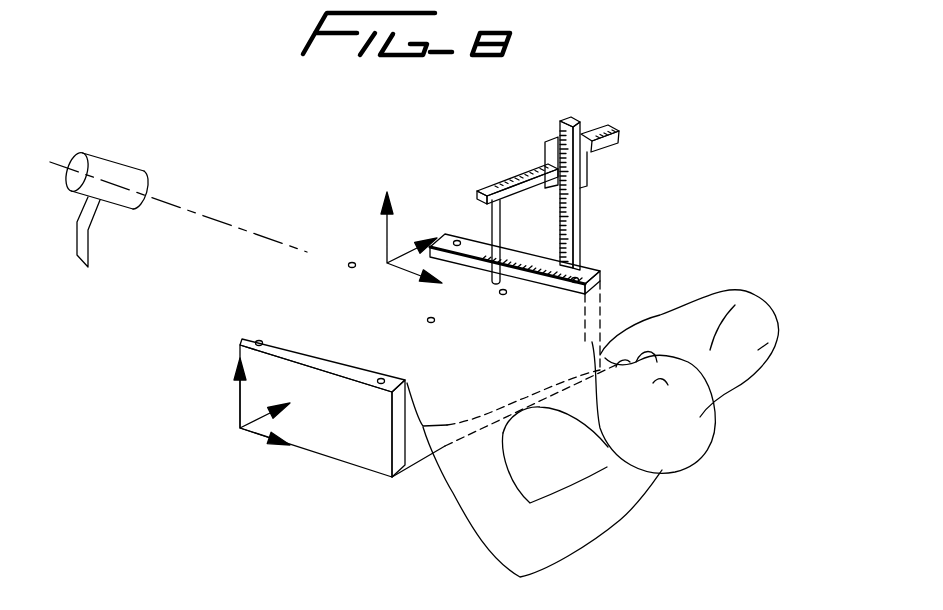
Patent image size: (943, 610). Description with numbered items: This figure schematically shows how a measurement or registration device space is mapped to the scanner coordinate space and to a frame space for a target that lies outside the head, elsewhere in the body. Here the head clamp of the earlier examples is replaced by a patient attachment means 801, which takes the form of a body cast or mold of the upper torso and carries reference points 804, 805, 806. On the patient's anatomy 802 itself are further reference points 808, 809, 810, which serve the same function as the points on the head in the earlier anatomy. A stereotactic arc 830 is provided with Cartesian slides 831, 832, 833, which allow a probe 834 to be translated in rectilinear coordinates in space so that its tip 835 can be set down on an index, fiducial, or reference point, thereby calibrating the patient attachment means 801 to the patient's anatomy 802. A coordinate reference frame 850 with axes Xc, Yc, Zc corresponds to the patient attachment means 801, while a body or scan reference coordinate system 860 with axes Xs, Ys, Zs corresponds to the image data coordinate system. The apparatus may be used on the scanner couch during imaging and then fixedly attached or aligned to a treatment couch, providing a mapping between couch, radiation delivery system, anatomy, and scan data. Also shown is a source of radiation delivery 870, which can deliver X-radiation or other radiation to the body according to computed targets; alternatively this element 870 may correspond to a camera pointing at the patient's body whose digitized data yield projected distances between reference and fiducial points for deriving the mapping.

The patient attachment means 801 is at (383, 452).
The patient's anatomy 802 is at (548, 332).
The reference point 804 is at (258, 340).
The reference point 805 is at (370, 386).
The reference point 806 is at (583, 266).
The reference point 808 is at (350, 264).
The reference point 809 is at (428, 320).
The reference point 810 is at (505, 295).
The stereotactic arc 830 is at (580, 170).
The Cartesian slide 831 is at (512, 262).
The Cartesian slide 832 is at (557, 202).
The Cartesian slide 833 is at (595, 128).
The probe 834 is at (491, 230).
The probe tip 835 is at (492, 283).
The coordinate reference frame 850 is at (240, 428).
The body or scan reference coordinate system 860 is at (387, 258).
The source of radiation delivery 870 is at (112, 170).